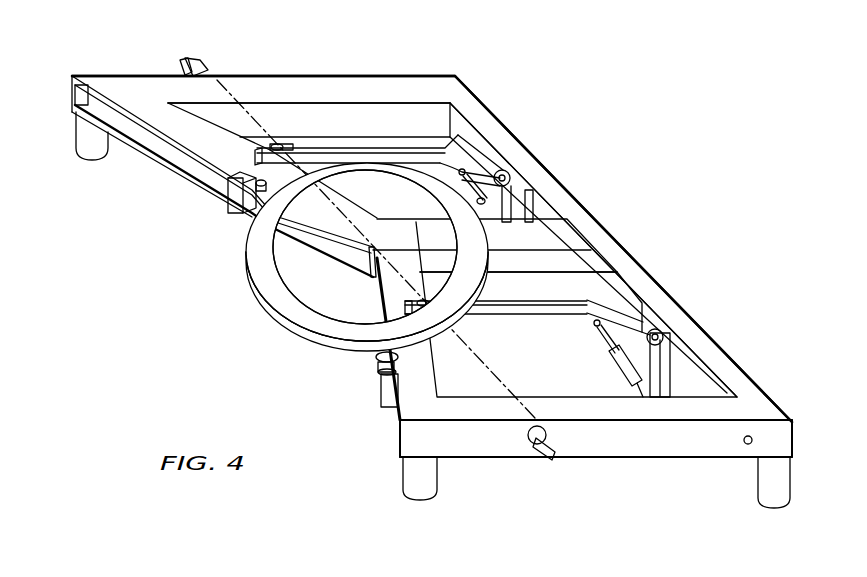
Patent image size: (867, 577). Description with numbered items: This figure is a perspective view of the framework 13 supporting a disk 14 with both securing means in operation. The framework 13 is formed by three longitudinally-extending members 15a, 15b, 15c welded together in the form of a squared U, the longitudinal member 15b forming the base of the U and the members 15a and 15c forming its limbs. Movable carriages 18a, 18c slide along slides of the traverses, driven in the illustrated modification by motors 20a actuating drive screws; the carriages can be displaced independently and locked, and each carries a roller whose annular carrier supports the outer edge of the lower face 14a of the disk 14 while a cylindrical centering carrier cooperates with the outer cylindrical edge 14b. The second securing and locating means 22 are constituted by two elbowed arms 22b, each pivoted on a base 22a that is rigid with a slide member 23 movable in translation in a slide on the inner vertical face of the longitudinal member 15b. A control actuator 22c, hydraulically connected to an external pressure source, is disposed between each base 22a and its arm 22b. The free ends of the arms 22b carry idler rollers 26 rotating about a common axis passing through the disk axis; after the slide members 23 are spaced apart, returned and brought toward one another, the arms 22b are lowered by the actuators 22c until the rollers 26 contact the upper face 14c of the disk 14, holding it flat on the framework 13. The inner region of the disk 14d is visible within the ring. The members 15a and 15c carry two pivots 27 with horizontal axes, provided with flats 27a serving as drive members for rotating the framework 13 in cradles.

The framework 13 is at (606, 152).
The disk 14 is at (329, 270).
The lower face of the disk 14a is at (250, 276).
The outer cylindrical edge of the disk 14b is at (283, 320).
The upper face of the disk 14c is at (323, 336).
The ring inner surface 14d is at (365, 247).
The longitudinally-extending member 15a is at (672, 440).
The longitudinally-extending member 15b is at (497, 135).
The longitudinally-extending member 15c is at (318, 75).
The movable carriage 18a is at (380, 393).
The movable carriage 18c is at (230, 207).
The motor 20a is at (88, 152).
The second securing and locating means 22 is at (417, 150).
The base 22a is at (668, 375).
The elbowed arm 22b is at (533, 314).
The control actuator 22c is at (617, 363).
The slide member 23 is at (533, 205).
The idler roller 26 is at (462, 283).
The pivot 27 is at (208, 68).
The flat 27a is at (193, 58).